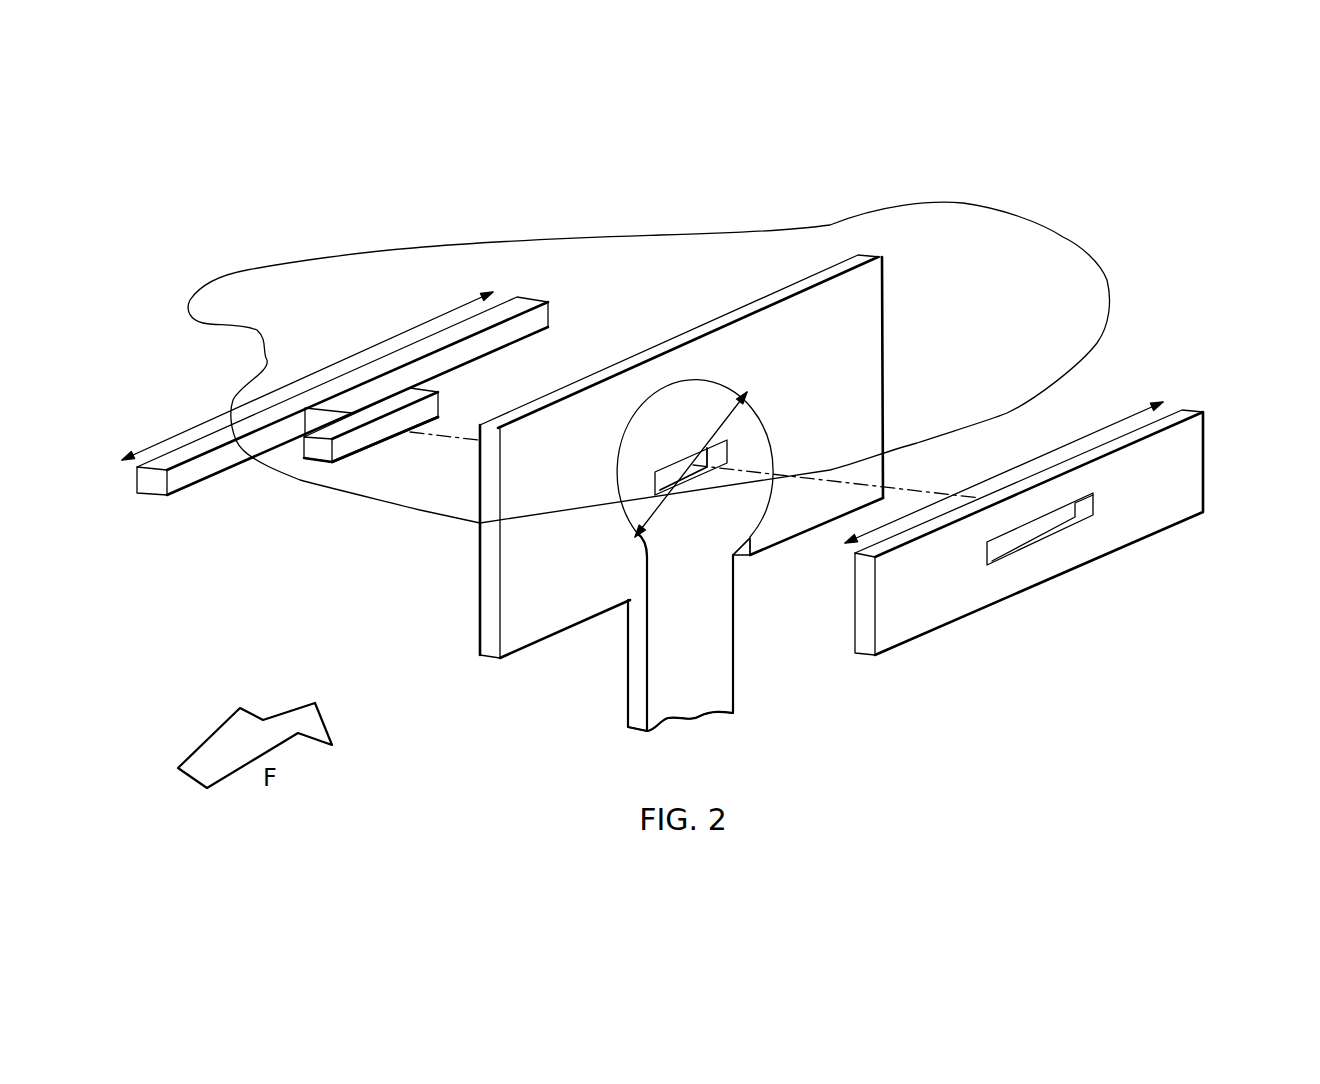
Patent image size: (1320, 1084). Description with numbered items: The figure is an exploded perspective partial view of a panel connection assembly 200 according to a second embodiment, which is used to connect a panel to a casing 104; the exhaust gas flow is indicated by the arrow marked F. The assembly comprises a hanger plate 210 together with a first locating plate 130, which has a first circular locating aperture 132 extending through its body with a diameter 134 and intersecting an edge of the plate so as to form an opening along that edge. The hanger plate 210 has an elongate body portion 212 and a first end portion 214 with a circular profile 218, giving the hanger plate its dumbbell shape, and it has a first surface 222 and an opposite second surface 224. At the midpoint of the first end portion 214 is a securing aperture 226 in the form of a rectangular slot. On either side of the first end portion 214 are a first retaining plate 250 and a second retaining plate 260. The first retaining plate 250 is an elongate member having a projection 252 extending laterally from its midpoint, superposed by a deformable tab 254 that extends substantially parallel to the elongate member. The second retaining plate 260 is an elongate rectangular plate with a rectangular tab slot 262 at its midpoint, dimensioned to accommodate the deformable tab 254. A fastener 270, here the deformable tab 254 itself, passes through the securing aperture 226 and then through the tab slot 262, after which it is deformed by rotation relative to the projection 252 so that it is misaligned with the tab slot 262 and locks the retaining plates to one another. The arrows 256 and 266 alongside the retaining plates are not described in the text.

The casing 104 is at (1087, 293).
The first locating plate 130 is at (868, 363).
The first circular locating aperture 132 is at (697, 358).
The diameter 134 is at (717, 427).
The panel connection assembly 200 is at (1218, 371).
The hanger plate 210 is at (625, 687).
The elongate body portion 212 is at (658, 707).
The first end portion 214 is at (637, 515).
The circular profile 218 is at (752, 523).
The first surface 222 is at (710, 657).
The second surface 224 is at (625, 627).
The securing aperture 226 is at (670, 462).
The first retaining plate 250 is at (185, 491).
The projection 252 is at (350, 405).
The deformable tab 254 is at (357, 455).
The direction of movement 256 is at (190, 425).
The second retaining plate 260 is at (933, 628).
The tab slot 262 is at (1020, 533).
The direction of movement 266 is at (990, 477).
The fastener 270 is at (392, 440).